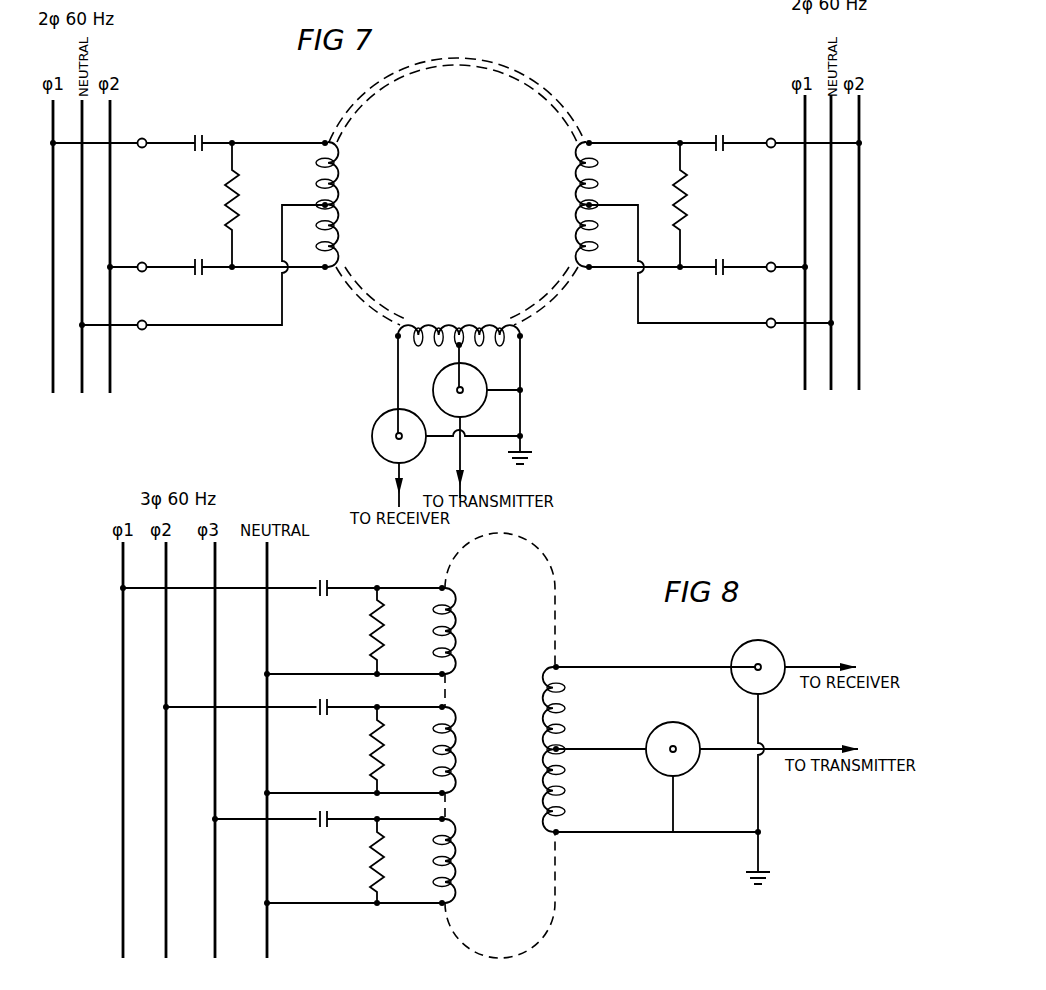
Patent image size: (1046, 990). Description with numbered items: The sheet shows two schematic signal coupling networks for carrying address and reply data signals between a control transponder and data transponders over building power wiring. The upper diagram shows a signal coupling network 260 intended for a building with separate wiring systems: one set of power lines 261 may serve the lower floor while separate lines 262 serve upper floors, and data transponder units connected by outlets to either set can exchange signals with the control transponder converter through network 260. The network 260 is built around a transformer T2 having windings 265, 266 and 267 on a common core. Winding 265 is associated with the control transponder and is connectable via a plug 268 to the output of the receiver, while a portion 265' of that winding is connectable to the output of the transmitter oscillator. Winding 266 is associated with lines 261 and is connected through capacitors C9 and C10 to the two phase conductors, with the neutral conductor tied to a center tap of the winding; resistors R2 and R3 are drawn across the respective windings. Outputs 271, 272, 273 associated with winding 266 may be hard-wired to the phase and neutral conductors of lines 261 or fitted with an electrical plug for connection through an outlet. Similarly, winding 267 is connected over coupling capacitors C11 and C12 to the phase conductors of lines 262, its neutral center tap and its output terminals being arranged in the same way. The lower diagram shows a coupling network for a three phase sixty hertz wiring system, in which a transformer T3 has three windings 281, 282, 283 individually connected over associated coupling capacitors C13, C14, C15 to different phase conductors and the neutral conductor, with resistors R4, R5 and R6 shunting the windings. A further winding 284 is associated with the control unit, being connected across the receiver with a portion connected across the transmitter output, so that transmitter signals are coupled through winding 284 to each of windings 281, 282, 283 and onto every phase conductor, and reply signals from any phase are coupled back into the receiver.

In FIG. 7, the signal coupling network 260 is at (638, 406).
In FIG. 7, the power lines 261 is at (124, 398).
In FIG. 7, the lines 262 is at (794, 384).
In FIG. 7, the winding 265 is at (428, 311).
In FIG. 7, the portion of the winding 265' is at (487, 311).
In FIG. 7, the winding 266 is at (340, 178).
In FIG. 7, the winding 267 is at (575, 177).
In FIG. 7, the plug 268 is at (462, 350).
In FIG. 7, the output 271 is at (144, 137).
In FIG. 7, the output 272 is at (146, 329).
In FIG. 7, the output 273 is at (143, 261).
In FIG. 7, the transformer T2 is at (590, 114).
In FIG. 7, the capacitor C9 is at (202, 132).
In FIG. 7, the capacitor C10 is at (201, 257).
In FIG. 7, the coupling capacitor C11 is at (724, 131).
In FIG. 7, the coupling capacitor C12 is at (724, 258).
In FIG. 7, the resistor R2 is at (238, 206).
In FIG. 7, the resistor R3 is at (690, 207).
In FIG. 8, the winding 281 is at (457, 623).
In FIG. 8, the winding 282 is at (458, 752).
In FIG. 8, the winding 283 is at (458, 861).
In FIG. 8, the winding 284 is at (544, 694).
In FIG. 8, the transformer T3 is at (590, 567).
In FIG. 8, the coupling capacitor C13 is at (333, 579).
In FIG. 8, the coupling capacitor C14 is at (324, 717).
In FIG. 8, the coupling capacitor C15 is at (324, 829).
In FIG. 8, the resistor R4 is at (371, 643).
In FIG. 8, the resistor R5 is at (371, 755).
In FIG. 8, the resistor R6 is at (371, 867).